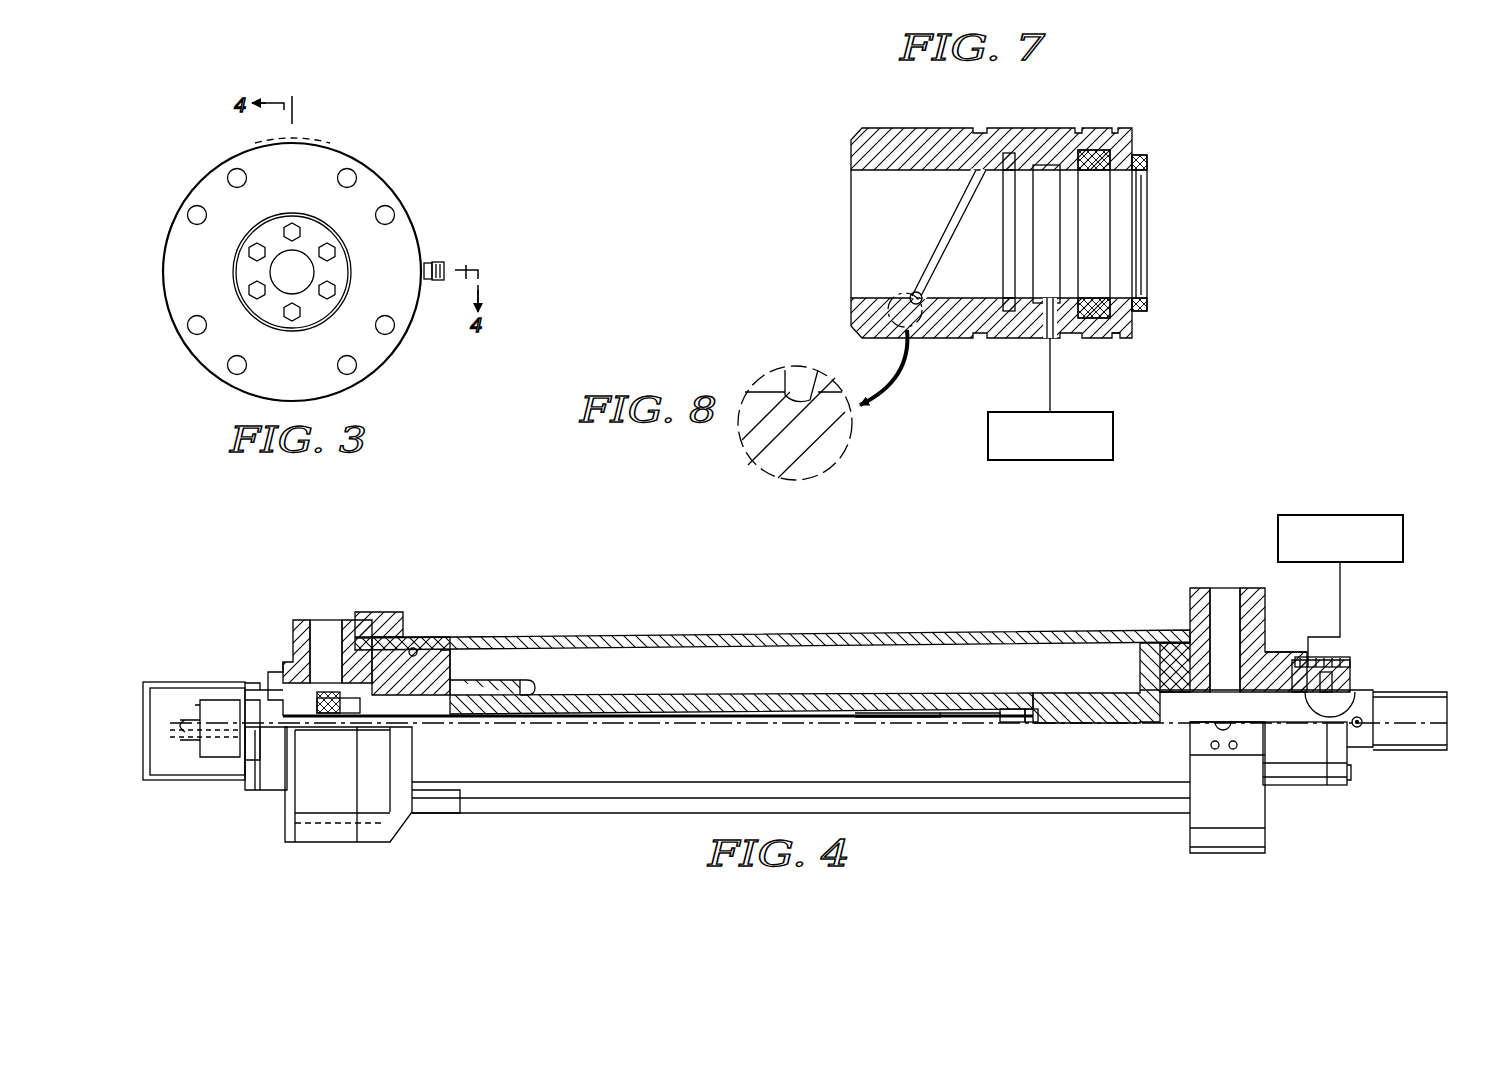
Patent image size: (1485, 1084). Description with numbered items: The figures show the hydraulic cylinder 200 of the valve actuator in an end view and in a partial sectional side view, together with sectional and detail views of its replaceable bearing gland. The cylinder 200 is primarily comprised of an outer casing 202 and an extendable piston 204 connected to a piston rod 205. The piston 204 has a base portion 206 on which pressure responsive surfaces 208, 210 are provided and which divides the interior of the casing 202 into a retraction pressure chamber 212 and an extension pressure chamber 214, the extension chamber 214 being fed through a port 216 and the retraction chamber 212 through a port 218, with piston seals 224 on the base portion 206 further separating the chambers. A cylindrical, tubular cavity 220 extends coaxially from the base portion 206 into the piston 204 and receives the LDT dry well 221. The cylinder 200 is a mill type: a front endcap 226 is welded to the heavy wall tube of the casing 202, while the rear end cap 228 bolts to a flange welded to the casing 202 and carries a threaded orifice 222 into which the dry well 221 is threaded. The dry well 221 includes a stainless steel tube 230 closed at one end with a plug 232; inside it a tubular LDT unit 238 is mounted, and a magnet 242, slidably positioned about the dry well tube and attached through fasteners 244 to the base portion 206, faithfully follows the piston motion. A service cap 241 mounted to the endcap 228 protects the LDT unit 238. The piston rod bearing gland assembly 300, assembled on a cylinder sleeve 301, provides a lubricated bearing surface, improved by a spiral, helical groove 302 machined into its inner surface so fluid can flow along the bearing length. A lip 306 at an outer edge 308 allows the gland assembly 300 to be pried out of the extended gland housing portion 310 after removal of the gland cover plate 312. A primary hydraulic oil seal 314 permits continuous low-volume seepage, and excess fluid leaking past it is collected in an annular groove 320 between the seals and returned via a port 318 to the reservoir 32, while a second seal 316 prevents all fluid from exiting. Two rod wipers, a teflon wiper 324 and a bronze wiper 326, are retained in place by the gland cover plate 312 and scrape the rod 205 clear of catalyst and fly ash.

In FIG. 7, the reservoir 32 is at (988, 440).
In FIG. 4, the reservoir 32 is at (1403, 532).
In FIG. 3, the hydraulic cylinder 200 is at (432, 176).
In FIG. 4, the hydraulic cylinder 200 is at (801, 681).
In FIG. 4, the outer casing 202 is at (846, 636).
In FIG. 4, the extendable piston 204 is at (520, 688).
In FIG. 3, the piston rod 205 is at (298, 262).
In FIG. 4, the piston rod 205 is at (1090, 692).
In FIG. 4, the base portion 206 is at (428, 712).
In FIG. 4, the pressure responsive surface 208 is at (456, 656).
In FIG. 4, the pressure responsive surface 210 is at (398, 601).
In FIG. 4, the retraction pressure chamber 212 is at (688, 640).
In FIG. 4, the extension pressure chamber 214 is at (280, 664).
In FIG. 4, the port 216 is at (326, 622).
In FIG. 3, the port 218 is at (440, 262).
In FIG. 4, the port 218 is at (1225, 595).
In FIG. 4, the tubular cavity 220 is at (1033, 722).
In FIG. 4, the LDT dry well 221 is at (806, 733).
In FIG. 4, the threaded orifice 222 is at (265, 690).
In FIG. 4, the piston seals 224 is at (416, 648).
In FIG. 3, the front endcap 226 is at (372, 180).
In FIG. 4, the front endcap 226 is at (1283, 652).
In FIG. 4, the rear end cap 228 is at (358, 614).
In FIG. 4, the stainless steel tube 230 is at (856, 716).
In FIG. 4, the plug 232 is at (1012, 722).
In FIG. 4, the tubular LDT unit 238 is at (903, 715).
In FIG. 4, the service cap 241 is at (178, 782).
In FIG. 4, the magnet 242 is at (332, 700).
In FIG. 4, the fasteners 244 is at (298, 665).
In FIG. 7, the piston rod bearing gland assembly 300 is at (1034, 213).
In FIG. 4, the piston rod bearing gland assembly 300 is at (1345, 690).
In FIG. 7, the cylinder sleeve 301 is at (890, 140).
In FIG. 7, the spiral helical groove 302 is at (930, 265).
In FIG. 8, the spiral helical groove 302 is at (795, 423).
In FIG. 7, the lip 306 is at (1120, 340).
In FIG. 7, the outer edge 308 is at (1110, 140).
In FIG. 4, the extended gland housing portion 310 is at (1300, 770).
In FIG. 4, the gland cover plate 312 is at (1340, 758).
In FIG. 7, the primary hydraulic oil seal 314 is at (1006, 152).
In FIG. 7, the second seal 316 is at (1148, 282).
In FIG. 7, the port 318 is at (1070, 338).
In FIG. 7, the annular groove 320 is at (1062, 128).
In FIG. 7, the teflon wiper 324 is at (1150, 156).
In FIG. 7, the bronze wiper 326 is at (1146, 228).